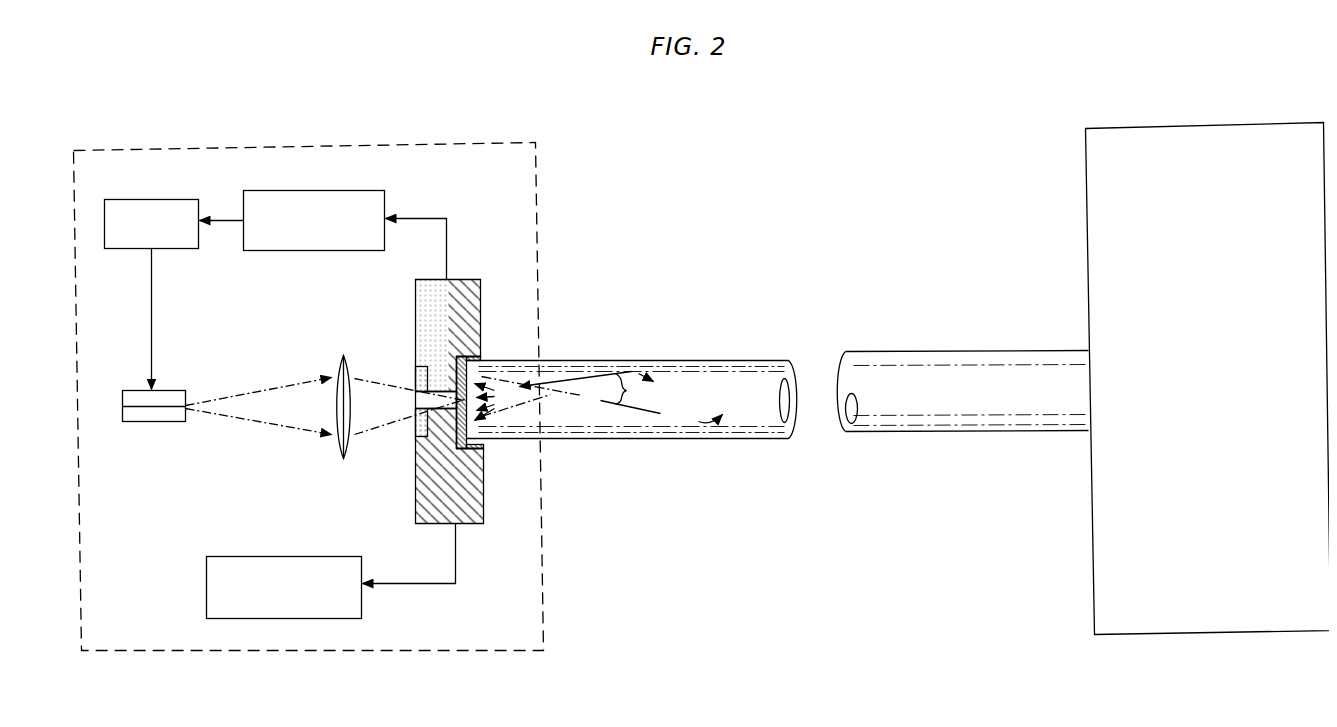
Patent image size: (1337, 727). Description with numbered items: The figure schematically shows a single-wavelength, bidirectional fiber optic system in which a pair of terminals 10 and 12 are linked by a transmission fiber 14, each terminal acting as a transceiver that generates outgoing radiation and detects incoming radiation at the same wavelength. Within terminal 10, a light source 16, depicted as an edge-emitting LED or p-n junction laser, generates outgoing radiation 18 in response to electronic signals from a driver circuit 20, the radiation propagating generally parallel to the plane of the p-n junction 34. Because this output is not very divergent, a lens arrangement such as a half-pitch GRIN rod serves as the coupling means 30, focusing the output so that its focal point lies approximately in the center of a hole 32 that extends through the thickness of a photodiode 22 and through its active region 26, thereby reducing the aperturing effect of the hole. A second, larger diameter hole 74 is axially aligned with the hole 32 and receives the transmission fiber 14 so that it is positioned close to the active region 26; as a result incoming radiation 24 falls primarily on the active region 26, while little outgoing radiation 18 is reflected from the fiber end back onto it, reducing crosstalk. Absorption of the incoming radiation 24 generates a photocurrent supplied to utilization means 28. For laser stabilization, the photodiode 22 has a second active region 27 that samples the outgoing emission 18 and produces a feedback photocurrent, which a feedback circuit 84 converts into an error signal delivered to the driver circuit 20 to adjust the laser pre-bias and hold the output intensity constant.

The terminal 10 is at (210, 146).
The terminal 12 is at (1190, 127).
The transmission fiber 14 is at (698, 362).
The light source 16 is at (150, 424).
The outgoing radiation 18 is at (495, 402).
The driver circuit 20 is at (148, 200).
The photodiode 22 is at (466, 312).
The incoming radiation 24 is at (602, 397).
The active region 26 is at (456, 360).
The second active region 27 is at (416, 384).
The utilization means 28 is at (248, 557).
The coupling means 30 is at (353, 374).
The hole 32 is at (440, 420).
The p-n junction 34 is at (169, 410).
The second larger diameter hole 74 is at (480, 446).
The feedback circuit 84 is at (370, 192).